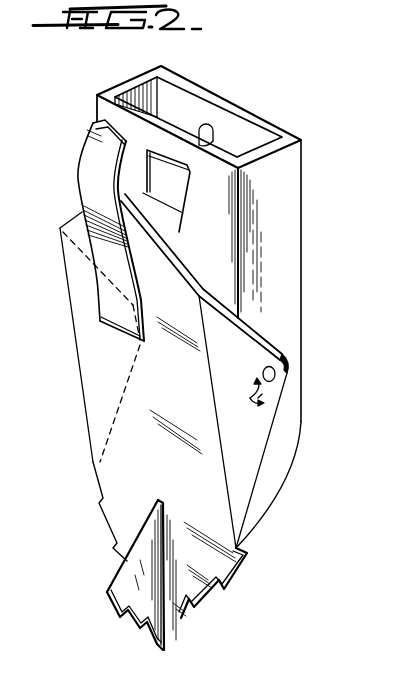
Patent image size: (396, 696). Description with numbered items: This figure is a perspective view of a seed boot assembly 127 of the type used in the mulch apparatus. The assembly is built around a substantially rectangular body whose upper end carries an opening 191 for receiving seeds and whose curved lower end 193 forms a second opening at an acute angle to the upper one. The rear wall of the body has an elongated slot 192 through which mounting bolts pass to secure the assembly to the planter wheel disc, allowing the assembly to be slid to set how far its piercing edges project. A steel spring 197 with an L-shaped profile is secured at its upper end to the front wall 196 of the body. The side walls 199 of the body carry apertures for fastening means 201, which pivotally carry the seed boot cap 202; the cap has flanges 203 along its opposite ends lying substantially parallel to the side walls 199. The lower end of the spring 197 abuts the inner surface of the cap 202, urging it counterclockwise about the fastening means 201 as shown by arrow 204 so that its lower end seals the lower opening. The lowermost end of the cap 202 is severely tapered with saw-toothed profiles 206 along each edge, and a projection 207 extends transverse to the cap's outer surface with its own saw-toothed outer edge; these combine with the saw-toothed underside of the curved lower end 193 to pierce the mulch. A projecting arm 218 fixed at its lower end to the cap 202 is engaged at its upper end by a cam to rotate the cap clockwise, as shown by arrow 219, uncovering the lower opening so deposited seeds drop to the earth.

The seed boot assembly 127 is at (230, 77).
The opening 191 is at (258, 133).
The elongated slot 192 is at (214, 128).
The lower end 193 is at (266, 501).
The front wall 196 is at (222, 253).
The steel spring 197 is at (186, 191).
The side walls 199 is at (127, 78).
The fastening means 201 is at (276, 373).
The seed boot cap 202 is at (88, 426).
The flanges 203 is at (258, 352).
The arrow 204 is at (250, 398).
The saw-toothed profiles 206 is at (113, 527).
The projection 207 is at (128, 582).
The projecting arm 218 is at (86, 173).
The arrow 219 is at (262, 394).